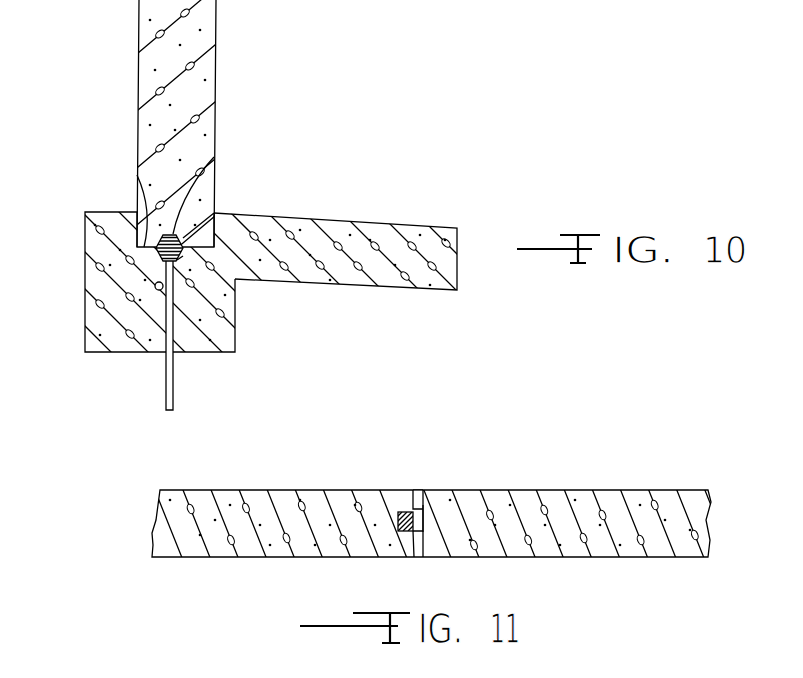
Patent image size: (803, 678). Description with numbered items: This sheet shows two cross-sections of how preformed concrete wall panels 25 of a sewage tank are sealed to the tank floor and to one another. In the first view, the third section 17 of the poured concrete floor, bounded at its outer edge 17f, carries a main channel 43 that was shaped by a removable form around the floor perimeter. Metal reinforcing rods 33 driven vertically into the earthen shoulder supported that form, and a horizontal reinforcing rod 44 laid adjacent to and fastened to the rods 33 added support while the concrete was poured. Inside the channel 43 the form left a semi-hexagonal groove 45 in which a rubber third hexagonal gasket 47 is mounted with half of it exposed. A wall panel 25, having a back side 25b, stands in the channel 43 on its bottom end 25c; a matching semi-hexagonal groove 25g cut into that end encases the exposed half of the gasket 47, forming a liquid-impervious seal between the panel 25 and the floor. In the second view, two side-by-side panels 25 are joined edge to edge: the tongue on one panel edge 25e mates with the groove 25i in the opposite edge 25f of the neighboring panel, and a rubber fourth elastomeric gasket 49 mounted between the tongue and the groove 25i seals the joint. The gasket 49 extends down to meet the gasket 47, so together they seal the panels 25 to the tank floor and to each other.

In FIG. 10, the third section 17 is at (410, 223).
In FIG. 10, the edge 17f is at (84, 299).
In FIG. 11, the wall panel 25 is at (267, 489).
In FIG. 10, the back side 25b is at (139, 78).
In FIG. 11, the back side 25b is at (428, 524).
In FIG. 10, the bottom end 25c is at (157, 251).
In FIG. 11, the edge 25e is at (425, 512).
In FIG. 11, the edge 25f is at (417, 558).
In FIG. 10, the semi-hexagonal groove 25g is at (214, 157).
In FIG. 11, the groove 25i is at (398, 513).
In FIG. 10, the metal reinforcing rod 33 is at (165, 401).
In FIG. 10, the main channel 43 is at (137, 183).
In FIG. 10, the reinforcing rod 44 is at (156, 289).
In FIG. 10, the semi-hexagonal groove 45 is at (177, 260).
In FIG. 10, the third hexagonal gasket 47 is at (214, 213).
In FIG. 11, the fourth elastomeric gasket 49 is at (420, 492).